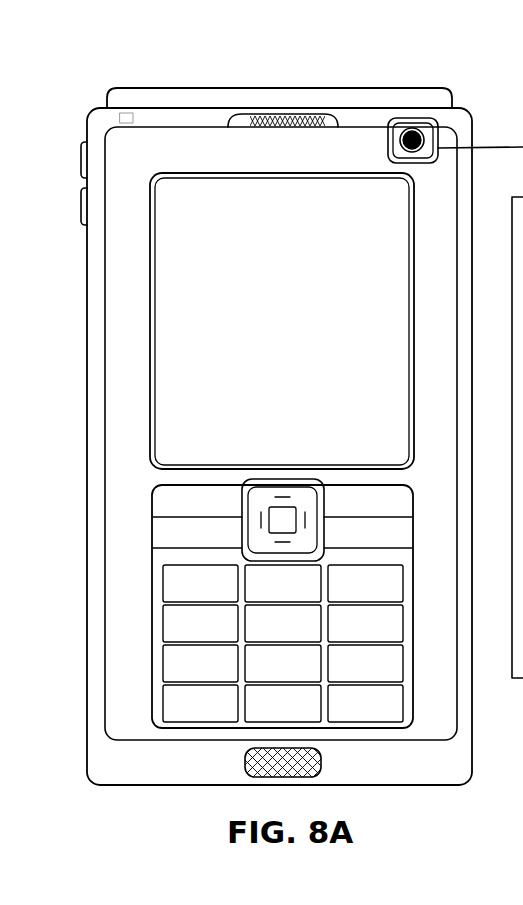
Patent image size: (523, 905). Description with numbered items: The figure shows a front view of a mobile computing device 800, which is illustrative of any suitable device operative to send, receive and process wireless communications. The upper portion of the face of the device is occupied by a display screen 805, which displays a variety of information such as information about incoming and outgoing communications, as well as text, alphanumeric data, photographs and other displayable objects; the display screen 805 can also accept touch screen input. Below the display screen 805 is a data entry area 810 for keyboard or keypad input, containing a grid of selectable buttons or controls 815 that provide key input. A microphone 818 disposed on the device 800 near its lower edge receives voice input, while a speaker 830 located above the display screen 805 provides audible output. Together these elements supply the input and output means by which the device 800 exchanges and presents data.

The mobile computing device 800 is at (86, 113).
The display screen 805 is at (185, 305).
The data entry area 810 is at (152, 527).
The selectable buttons or controls 815 is at (175, 622).
The microphone 818 is at (243, 765).
The speaker 830 is at (320, 118).